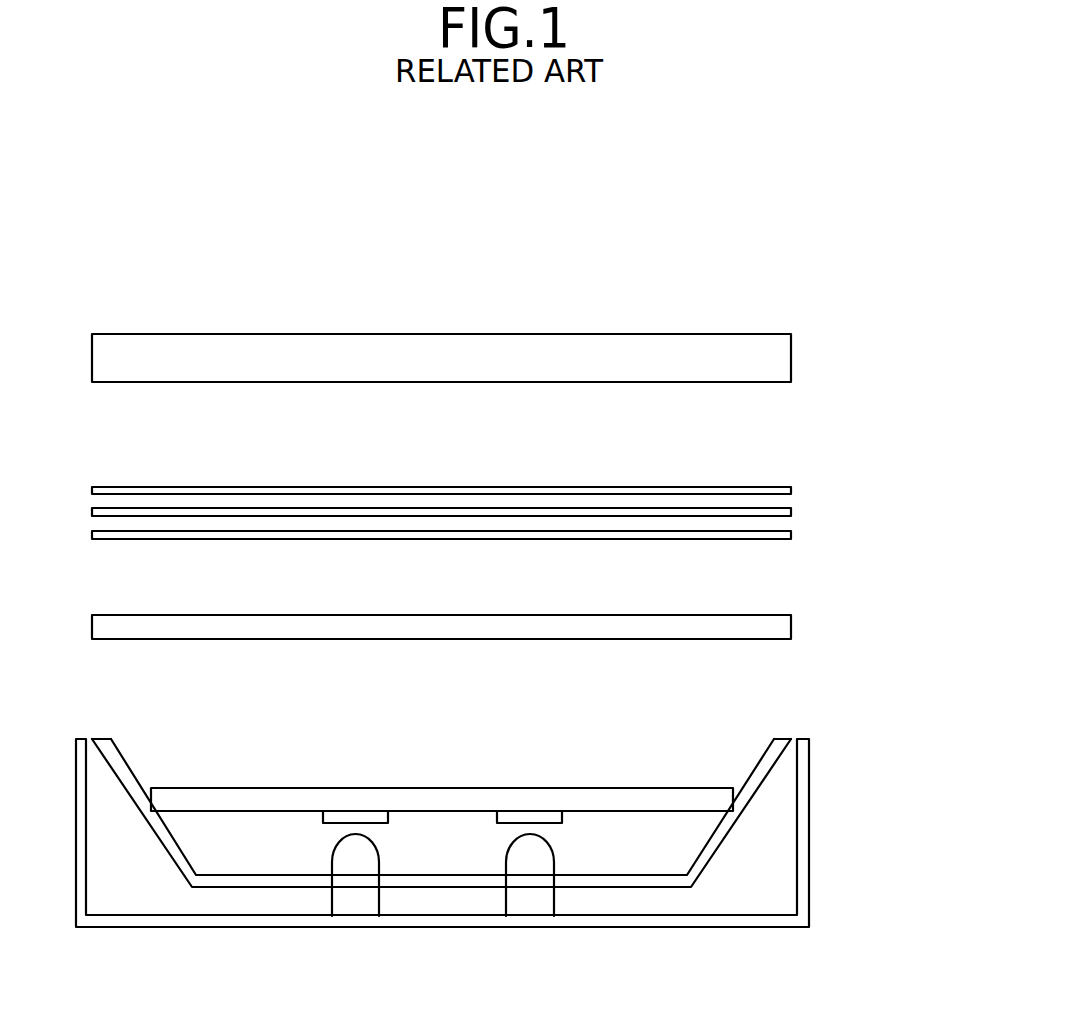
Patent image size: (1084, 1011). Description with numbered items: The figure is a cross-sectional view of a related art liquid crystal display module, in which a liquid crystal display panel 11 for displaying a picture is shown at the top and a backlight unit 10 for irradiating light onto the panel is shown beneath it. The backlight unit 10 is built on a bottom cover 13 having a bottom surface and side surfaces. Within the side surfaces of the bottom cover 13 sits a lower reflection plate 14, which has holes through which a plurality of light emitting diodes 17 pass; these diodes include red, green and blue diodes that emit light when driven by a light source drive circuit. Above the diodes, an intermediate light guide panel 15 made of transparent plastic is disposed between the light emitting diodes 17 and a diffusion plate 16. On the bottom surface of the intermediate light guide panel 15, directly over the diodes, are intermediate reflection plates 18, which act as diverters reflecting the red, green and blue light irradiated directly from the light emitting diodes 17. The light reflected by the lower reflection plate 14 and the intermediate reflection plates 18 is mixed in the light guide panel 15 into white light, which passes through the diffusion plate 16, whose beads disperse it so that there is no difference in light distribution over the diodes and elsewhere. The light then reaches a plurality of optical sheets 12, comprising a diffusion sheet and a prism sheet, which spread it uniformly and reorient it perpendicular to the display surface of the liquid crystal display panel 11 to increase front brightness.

The backlight unit 10 is at (513, 771).
The liquid crystal display panel 11 is at (772, 347).
The optical sheets 12 is at (806, 480).
The bottom cover 13 is at (803, 857).
The lower reflection plate 14 is at (775, 750).
The intermediate light guide panel 15 is at (512, 803).
The diffusion plate 16 is at (760, 628).
The light emitting diodes 17 is at (530, 867).
The intermediate reflection plates 18 is at (511, 817).